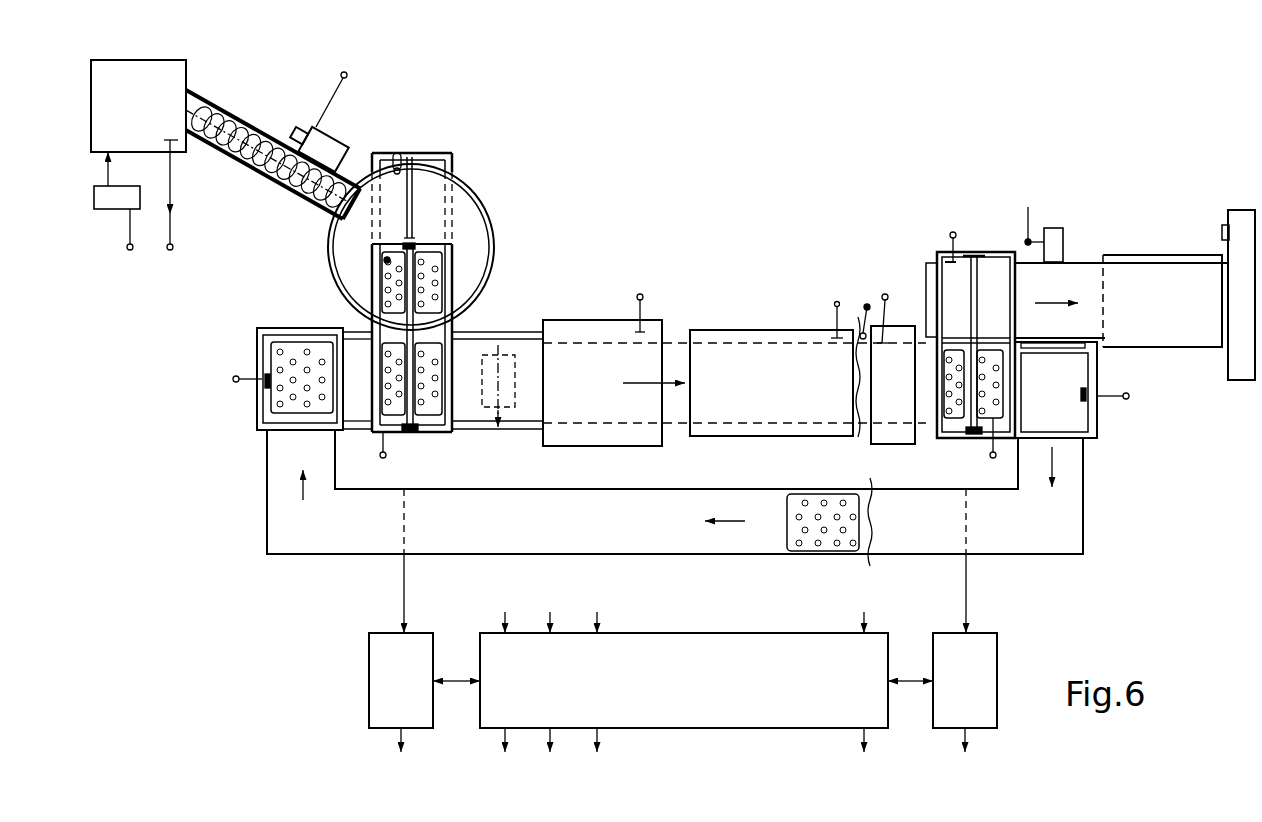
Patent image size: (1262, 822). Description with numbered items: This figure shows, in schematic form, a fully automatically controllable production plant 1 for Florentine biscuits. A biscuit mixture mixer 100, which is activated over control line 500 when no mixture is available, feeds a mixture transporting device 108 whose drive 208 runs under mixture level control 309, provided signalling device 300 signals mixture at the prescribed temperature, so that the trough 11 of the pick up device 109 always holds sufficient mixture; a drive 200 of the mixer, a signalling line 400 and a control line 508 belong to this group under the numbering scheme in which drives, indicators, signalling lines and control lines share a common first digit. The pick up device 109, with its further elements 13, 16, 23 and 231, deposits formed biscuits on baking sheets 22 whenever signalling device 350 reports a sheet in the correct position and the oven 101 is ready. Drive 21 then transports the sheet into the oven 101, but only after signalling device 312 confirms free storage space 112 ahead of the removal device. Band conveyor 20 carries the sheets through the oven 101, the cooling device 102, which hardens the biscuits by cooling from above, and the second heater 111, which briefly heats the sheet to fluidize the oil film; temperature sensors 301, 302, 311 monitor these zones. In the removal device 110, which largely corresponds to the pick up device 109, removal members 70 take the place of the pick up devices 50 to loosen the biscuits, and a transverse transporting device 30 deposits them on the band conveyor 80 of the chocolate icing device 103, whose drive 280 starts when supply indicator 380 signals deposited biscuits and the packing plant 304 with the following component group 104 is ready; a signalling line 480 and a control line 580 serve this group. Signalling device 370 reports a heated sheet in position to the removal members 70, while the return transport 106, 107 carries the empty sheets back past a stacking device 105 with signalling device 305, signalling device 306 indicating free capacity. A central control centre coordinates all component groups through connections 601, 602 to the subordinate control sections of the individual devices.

The biscuit mixture mixer 100 is at (146, 104).
The feeder unit 200 is at (100, 200).
The control line 500 is at (134, 251).
The signalling device 300 is at (185, 153).
The signal line 400 is at (171, 225).
The mixture transporting device 108 is at (243, 122).
The drive of mixture conveyor 208 is at (322, 140).
The lever sensor 508 is at (328, 95).
The trough 11 is at (475, 212).
The mixture level signalling device 309 is at (399, 152).
The rod 16 is at (413, 205).
The cross bar 13 is at (415, 247).
The lifting station 23 is at (366, 338).
The transverse transporting device 30 is at (445, 328).
The pick up devices 50 is at (386, 260).
The pick up device 109 is at (443, 430).
The signalling device 350 is at (380, 453).
The control line 231 is at (407, 417).
The stacking device 105 is at (262, 432).
The signalling device 305 is at (265, 386).
The conveyor 1 is at (517, 430).
The drive 21 is at (508, 356).
The oven 101 is at (593, 446).
The band conveyor 20 is at (678, 355).
The temperature sensor 301 is at (636, 313).
The cooling device 102 is at (738, 343).
The temperature sensor 302 is at (835, 313).
The storage space 112 is at (861, 325).
The temperature sensor 311 is at (862, 326).
The signalling device 312 is at (894, 304).
The second heater 111 is at (893, 436).
The removal member 70 is at (953, 413).
The removal device 110 is at (977, 255).
The supply indicator 380 is at (948, 260).
The sensor 480 is at (951, 233).
The sensor 580 is at (938, 487).
The drive 280 is at (1053, 228).
The band conveyor 80 is at (1086, 280).
The chocolate icing device 103 is at (1143, 255).
The station 104 is at (1240, 367).
The packing plant 304 is at (1225, 225).
The return transport 106 is at (1097, 425).
The signalling device 306 is at (1086, 392).
The signalling device 370 is at (997, 420).
The return transport path 107 is at (983, 544).
The baking sheet 22 is at (815, 504).
The control line 601 is at (457, 682).
The control line 602 is at (912, 682).